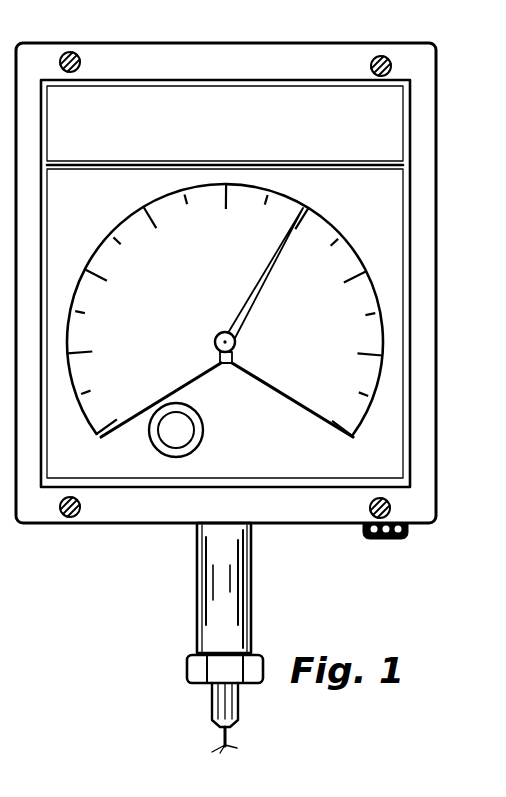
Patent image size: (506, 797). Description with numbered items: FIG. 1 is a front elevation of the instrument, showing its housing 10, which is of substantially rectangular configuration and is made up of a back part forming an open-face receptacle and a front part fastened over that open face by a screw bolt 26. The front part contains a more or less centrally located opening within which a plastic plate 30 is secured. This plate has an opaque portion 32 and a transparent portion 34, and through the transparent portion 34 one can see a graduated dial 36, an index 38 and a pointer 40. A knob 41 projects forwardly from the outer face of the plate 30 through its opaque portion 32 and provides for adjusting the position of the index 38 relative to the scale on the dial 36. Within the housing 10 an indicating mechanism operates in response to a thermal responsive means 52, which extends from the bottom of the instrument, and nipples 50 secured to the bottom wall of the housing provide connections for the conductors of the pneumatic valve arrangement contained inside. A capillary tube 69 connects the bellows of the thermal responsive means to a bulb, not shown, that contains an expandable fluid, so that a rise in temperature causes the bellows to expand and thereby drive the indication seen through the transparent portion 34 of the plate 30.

The housing 10 is at (103, 549).
The screw bolt 26 is at (82, 53).
The plastic plate 30 is at (374, 207).
The opaque portion 32 is at (400, 264).
The transparent portion 34 is at (278, 375).
The graduated dial 36 is at (126, 229).
The index 38 is at (226, 182).
The pointer 40 is at (243, 313).
The knob 41 is at (181, 445).
The nipples 50 is at (383, 541).
The thermal responsive means 52 is at (196, 602).
The capillary tube 69 is at (222, 741).